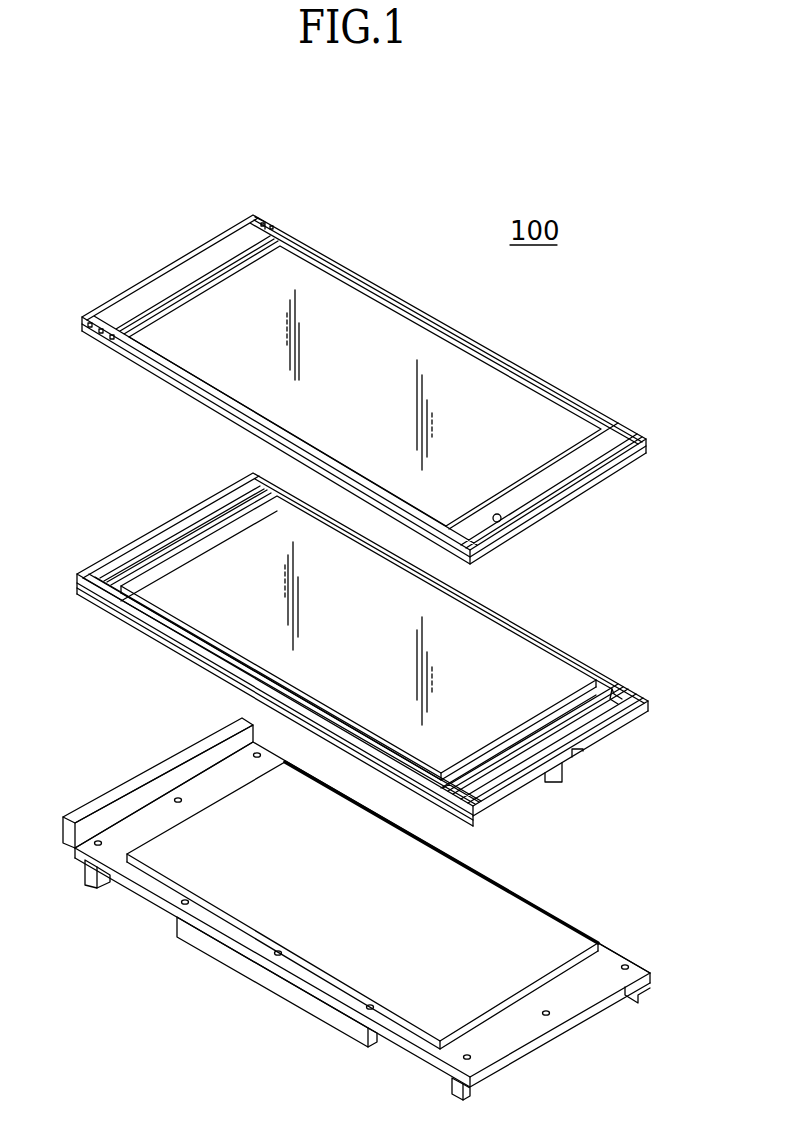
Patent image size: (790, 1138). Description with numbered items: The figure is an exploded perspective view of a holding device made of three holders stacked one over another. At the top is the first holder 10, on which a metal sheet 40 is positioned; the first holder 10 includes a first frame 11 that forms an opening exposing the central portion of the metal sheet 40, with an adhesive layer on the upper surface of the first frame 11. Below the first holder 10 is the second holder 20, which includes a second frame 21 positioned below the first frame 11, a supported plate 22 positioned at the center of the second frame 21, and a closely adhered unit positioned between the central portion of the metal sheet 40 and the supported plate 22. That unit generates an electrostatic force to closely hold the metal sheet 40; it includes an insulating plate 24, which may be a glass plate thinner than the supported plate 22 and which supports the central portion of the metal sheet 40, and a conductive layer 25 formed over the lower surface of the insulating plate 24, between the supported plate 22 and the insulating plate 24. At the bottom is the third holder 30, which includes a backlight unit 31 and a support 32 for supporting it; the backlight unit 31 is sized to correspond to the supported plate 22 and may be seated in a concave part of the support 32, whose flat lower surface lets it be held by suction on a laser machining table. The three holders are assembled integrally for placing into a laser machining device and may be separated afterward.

The first holder 10 is at (364, 389).
The first frame 11 is at (273, 226).
The metal sheet 40 is at (380, 328).
The second holder 20 is at (362, 649).
The second frame 21 is at (617, 692).
The supported plate 22 is at (205, 648).
The insulating plate 24 is at (467, 642).
The conductive layer 25 is at (143, 612).
The third holder 30 is at (356, 909).
The backlight unit 31 is at (483, 900).
The support 32 is at (613, 958).